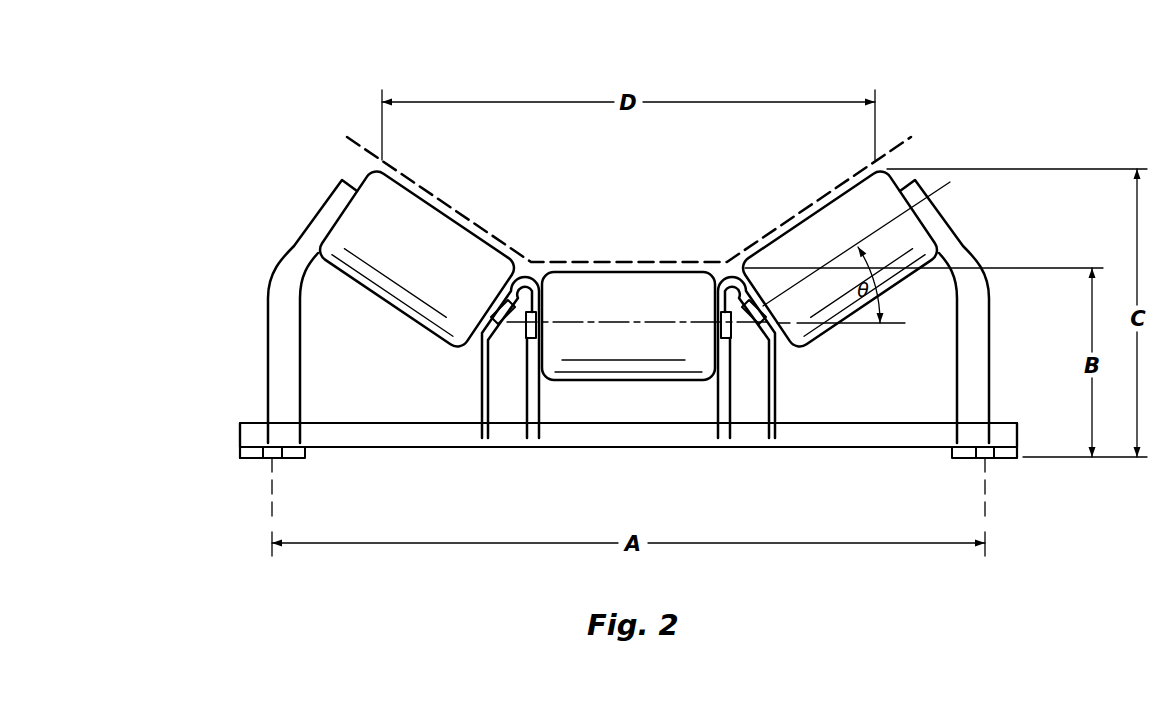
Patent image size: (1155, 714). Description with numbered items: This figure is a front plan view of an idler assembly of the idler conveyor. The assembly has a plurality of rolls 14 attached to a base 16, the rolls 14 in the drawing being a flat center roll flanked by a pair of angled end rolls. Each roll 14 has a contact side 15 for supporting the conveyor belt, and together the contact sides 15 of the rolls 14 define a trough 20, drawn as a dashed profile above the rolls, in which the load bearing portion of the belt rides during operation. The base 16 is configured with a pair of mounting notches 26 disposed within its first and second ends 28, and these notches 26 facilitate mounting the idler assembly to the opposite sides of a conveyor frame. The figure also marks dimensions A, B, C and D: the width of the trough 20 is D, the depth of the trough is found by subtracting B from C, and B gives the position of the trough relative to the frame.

The roll 14 is at (395, 305).
The contact side 15 is at (433, 207).
The base 16 is at (417, 437).
The trough 20 is at (359, 136).
The mounting notch 26 is at (268, 458).
The end of the base 28 is at (238, 433).